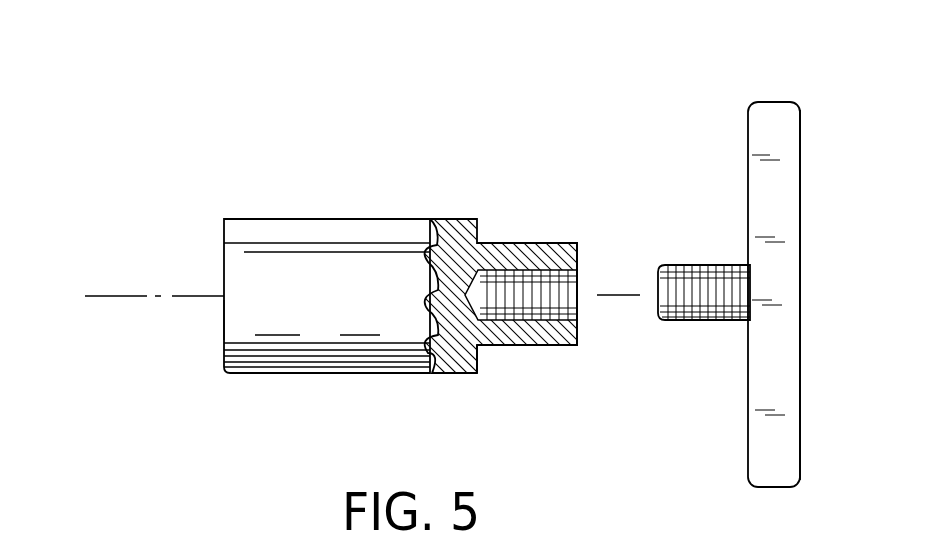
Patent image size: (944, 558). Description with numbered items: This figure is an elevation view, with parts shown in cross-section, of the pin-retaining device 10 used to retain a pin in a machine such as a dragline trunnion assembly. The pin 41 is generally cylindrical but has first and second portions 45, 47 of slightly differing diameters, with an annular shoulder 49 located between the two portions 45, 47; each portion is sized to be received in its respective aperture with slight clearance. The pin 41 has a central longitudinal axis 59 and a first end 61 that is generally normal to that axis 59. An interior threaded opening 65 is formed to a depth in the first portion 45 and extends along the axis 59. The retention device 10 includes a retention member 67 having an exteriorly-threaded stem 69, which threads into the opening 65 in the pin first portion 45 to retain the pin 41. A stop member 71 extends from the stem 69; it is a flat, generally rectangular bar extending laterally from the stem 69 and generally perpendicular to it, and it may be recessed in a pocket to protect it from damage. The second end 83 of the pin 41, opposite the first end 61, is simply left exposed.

The pin-retaining device 10 is at (476, 186).
The pin 41 is at (313, 218).
The first portion 45 is at (512, 347).
The second portion 47 is at (353, 350).
The annular shoulder 49 is at (480, 227).
The central longitudinal axis 59 is at (130, 296).
The first end 61 is at (578, 249).
The interior threaded opening 65 is at (578, 277).
The retention member 67 is at (769, 76).
The exteriorly-threaded stem 69 is at (720, 322).
The stop member 71 is at (800, 143).
The second end 83 is at (224, 333).